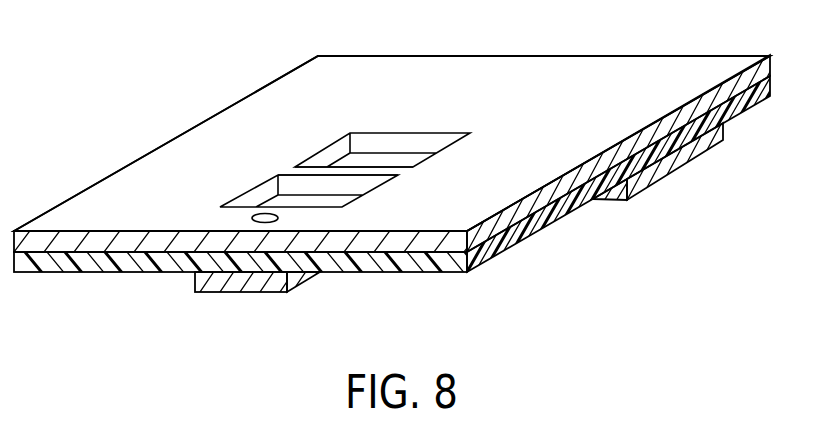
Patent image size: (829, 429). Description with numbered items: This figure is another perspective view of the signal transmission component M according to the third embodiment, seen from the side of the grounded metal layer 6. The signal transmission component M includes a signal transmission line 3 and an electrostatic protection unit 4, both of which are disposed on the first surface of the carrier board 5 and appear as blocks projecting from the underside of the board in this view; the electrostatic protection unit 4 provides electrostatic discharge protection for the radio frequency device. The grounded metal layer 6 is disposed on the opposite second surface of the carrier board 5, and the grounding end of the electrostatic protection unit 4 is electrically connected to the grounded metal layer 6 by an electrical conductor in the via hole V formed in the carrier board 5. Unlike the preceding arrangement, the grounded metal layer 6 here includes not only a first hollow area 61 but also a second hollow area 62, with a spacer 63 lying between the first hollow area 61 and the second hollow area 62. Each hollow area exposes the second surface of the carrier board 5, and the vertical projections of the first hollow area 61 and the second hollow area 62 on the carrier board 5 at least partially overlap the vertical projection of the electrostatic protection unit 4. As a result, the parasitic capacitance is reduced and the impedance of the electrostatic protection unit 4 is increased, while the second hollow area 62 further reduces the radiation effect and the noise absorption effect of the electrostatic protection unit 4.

The signal transmission component M is at (45, 33).
The signal transmission line 3 is at (691, 168).
The electrostatic protection unit 4 is at (303, 280).
The carrier board 5 is at (114, 275).
The grounded metal layer 6 is at (189, 127).
The first hollow area 61 is at (398, 141).
The second hollow area 62 is at (294, 185).
The spacer 63 is at (344, 169).
The via hole V is at (262, 212).